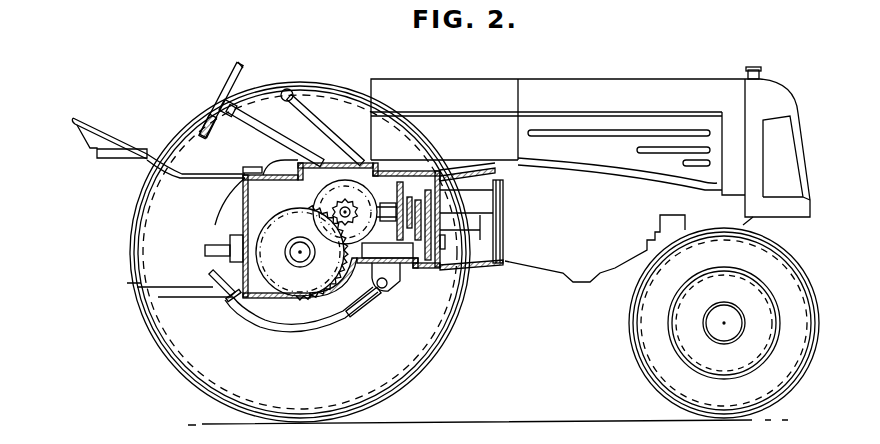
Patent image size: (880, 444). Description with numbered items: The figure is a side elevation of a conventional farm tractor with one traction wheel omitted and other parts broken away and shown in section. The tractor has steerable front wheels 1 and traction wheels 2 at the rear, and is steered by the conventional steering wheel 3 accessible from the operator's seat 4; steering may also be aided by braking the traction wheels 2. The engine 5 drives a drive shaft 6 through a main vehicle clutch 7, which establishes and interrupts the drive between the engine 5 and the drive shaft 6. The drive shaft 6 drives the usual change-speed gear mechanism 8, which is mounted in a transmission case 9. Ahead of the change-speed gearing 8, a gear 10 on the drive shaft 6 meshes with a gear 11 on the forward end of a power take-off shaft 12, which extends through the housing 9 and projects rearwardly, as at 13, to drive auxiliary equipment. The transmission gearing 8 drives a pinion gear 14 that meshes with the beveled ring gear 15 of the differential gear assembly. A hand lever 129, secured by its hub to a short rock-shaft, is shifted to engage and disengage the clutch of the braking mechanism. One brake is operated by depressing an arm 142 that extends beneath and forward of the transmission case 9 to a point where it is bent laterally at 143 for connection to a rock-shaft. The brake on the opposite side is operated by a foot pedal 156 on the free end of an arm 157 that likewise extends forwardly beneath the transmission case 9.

The front wheels 1 is at (787, 258).
The traction wheels 2 is at (447, 338).
The steering wheel 3 is at (240, 62).
The operator's seat 4 is at (119, 143).
The engine 5 is at (590, 174).
The drive shaft 6 is at (471, 216).
The main vehicle clutch 7 is at (504, 208).
The change-speed gear mechanism 8 is at (413, 192).
The transmission case 9 is at (402, 180).
The gear 10 is at (441, 196).
The gear 11 is at (445, 230).
The power take-off shaft 12 is at (400, 282).
The rearward projection of power take-off shaft 13 is at (211, 230).
The pinion gear 14 is at (373, 207).
The beveled ring gear 15 is at (320, 204).
The hand lever 129 is at (313, 118).
The arm 142 is at (290, 330).
The lateral bend of arm 143 is at (390, 300).
The foot pedal 156 is at (213, 276).
The arm 157 is at (255, 325).